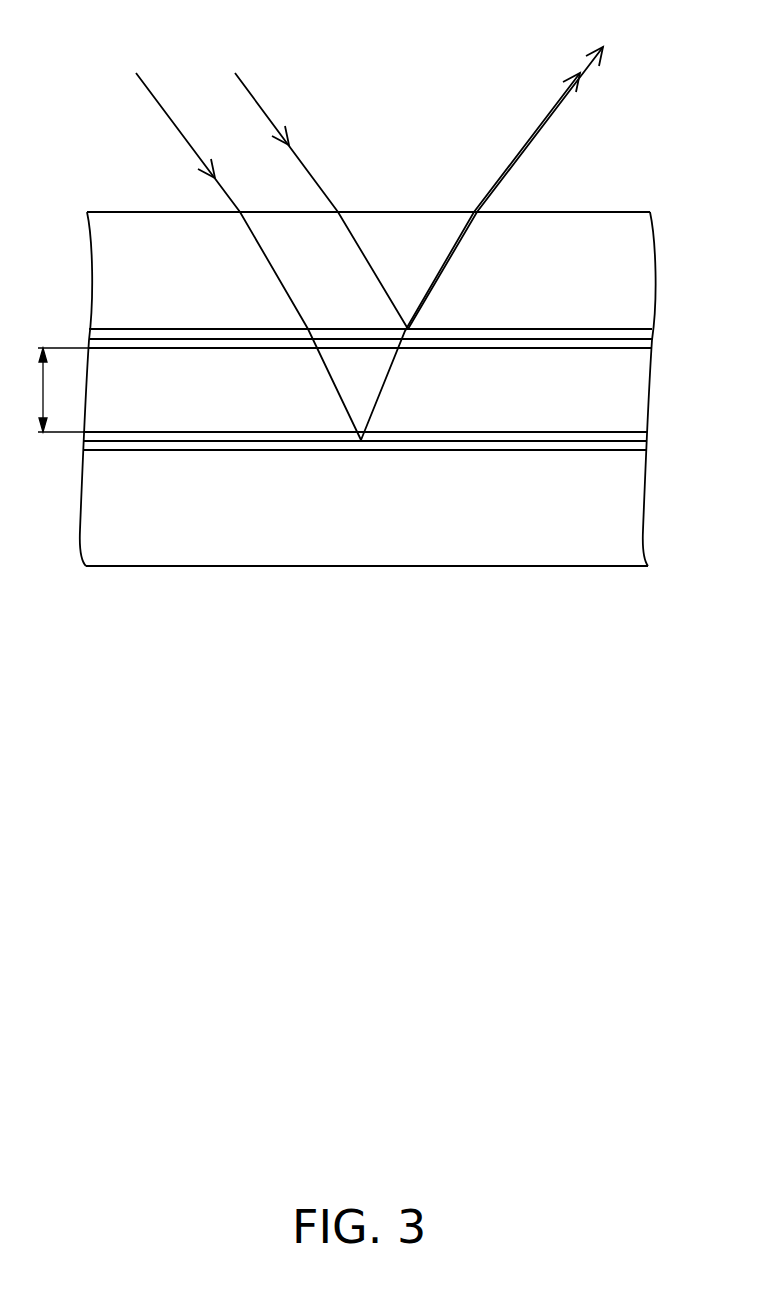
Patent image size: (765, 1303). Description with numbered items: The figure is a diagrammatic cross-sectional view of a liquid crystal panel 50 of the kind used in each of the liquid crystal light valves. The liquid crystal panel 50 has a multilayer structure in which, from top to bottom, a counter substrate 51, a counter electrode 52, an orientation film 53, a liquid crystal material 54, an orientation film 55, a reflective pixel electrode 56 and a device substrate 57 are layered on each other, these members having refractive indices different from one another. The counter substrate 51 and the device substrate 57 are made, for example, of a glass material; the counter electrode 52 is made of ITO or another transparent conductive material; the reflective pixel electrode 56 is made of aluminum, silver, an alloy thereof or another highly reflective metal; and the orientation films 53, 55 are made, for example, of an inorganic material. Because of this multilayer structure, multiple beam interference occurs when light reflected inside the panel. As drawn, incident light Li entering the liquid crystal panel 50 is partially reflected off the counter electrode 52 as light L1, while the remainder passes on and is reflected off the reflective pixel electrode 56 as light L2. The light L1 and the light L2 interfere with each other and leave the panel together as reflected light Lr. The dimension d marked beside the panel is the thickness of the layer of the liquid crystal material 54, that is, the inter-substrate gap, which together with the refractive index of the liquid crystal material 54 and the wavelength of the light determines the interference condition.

The liquid crystal panel 50 is at (680, 92).
The counter substrate 51 is at (648, 274).
The counter electrode 52 is at (628, 333).
The orientation film 53 is at (628, 343).
The liquid crystal material 54 is at (642, 392).
The orientation film 55 is at (628, 434).
The reflective pixel electrode 56 is at (628, 445).
The device substrate 57 is at (637, 507).
The thickness of the layer of the liquid crystal material d is at (53, 390).
The incident light Li is at (272, 238).
The reflected light Lr is at (604, 27).
The light reflected off the counter electrode L1 is at (458, 250).
The light reflected off the reflective pixel electrode L2 is at (384, 385).